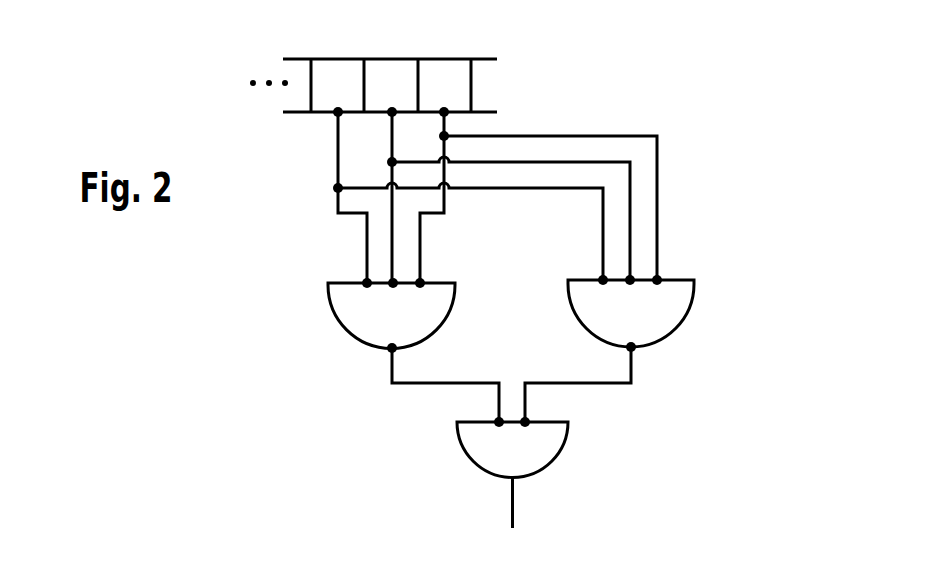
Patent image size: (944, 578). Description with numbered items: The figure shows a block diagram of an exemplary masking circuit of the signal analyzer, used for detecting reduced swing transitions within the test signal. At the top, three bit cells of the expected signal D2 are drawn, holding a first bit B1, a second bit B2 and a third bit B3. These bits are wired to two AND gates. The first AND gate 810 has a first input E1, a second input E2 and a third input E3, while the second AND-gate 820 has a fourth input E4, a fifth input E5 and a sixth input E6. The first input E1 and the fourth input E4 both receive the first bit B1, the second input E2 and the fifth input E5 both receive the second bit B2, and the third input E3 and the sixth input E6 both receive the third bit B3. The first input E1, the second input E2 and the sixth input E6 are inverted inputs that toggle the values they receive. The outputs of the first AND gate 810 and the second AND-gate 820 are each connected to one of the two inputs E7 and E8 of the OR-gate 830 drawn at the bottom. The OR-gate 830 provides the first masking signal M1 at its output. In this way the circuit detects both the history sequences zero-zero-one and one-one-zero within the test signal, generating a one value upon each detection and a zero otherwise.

The first AND gate 810 is at (371, 350).
The second AND-gate 820 is at (659, 348).
The OR-gate 830 is at (561, 472).
The expected signal D2 is at (388, 85).
The first bit B1 is at (464, 177).
The second bit B2 is at (504, 177).
The third bit B3 is at (538, 177).
The first input E1 is at (364, 296).
The second input E2 is at (392, 296).
The third input E3 is at (421, 296).
The fourth input E4 is at (598, 292).
The fifth input E5 is at (631, 292).
The sixth input E6 is at (661, 292).
The input of the OR-gate E7 is at (496, 434).
The input of the OR-gate E8 is at (530, 434).
The first masking signal M1 is at (531, 503).